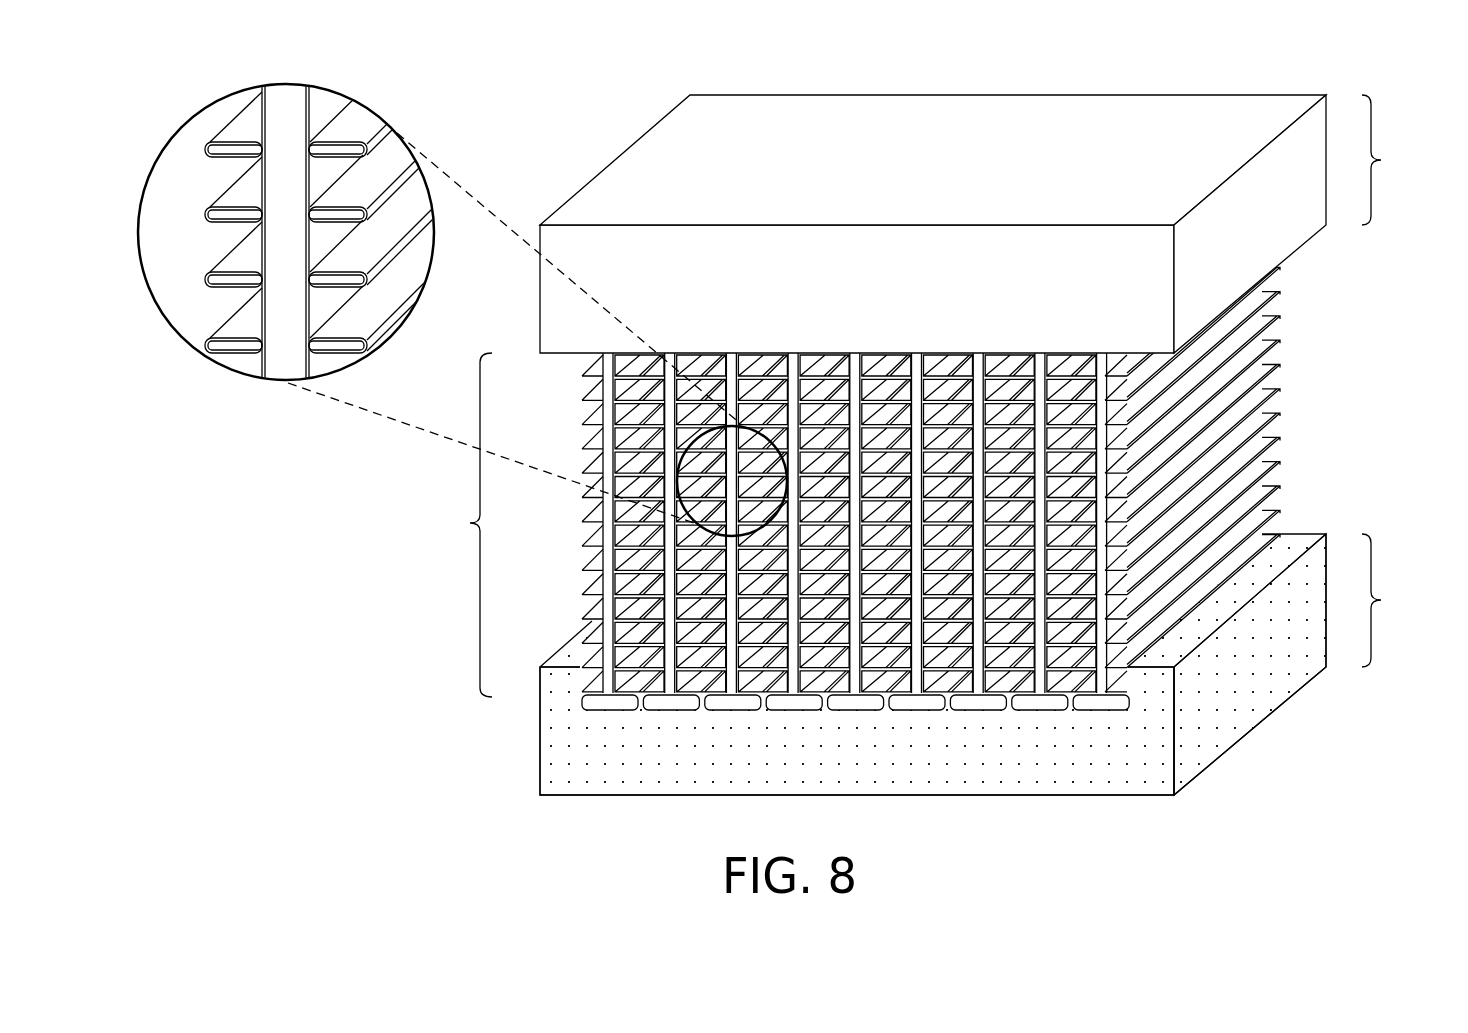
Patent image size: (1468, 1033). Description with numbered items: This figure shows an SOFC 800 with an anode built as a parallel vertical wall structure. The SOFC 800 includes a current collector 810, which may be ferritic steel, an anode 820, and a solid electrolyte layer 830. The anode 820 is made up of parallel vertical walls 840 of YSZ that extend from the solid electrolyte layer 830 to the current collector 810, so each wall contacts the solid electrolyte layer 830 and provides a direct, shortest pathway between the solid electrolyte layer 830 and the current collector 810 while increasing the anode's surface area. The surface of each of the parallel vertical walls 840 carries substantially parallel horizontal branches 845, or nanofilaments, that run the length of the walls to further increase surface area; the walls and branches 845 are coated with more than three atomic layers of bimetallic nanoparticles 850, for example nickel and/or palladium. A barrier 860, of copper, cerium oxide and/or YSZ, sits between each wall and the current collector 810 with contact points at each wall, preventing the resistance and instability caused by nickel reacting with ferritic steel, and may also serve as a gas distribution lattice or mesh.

The SOFC 800 is at (172, 50).
The current collector 810 is at (541, 794).
The anode 820 is at (1362, 225).
The solid electrolyte layer 830 is at (1240, 95).
The parallel vertical walls 840 is at (285, 362).
The branches 845 is at (365, 283).
The bimetallic nanoparticles 850 is at (207, 214).
The barrier 860 is at (593, 705).